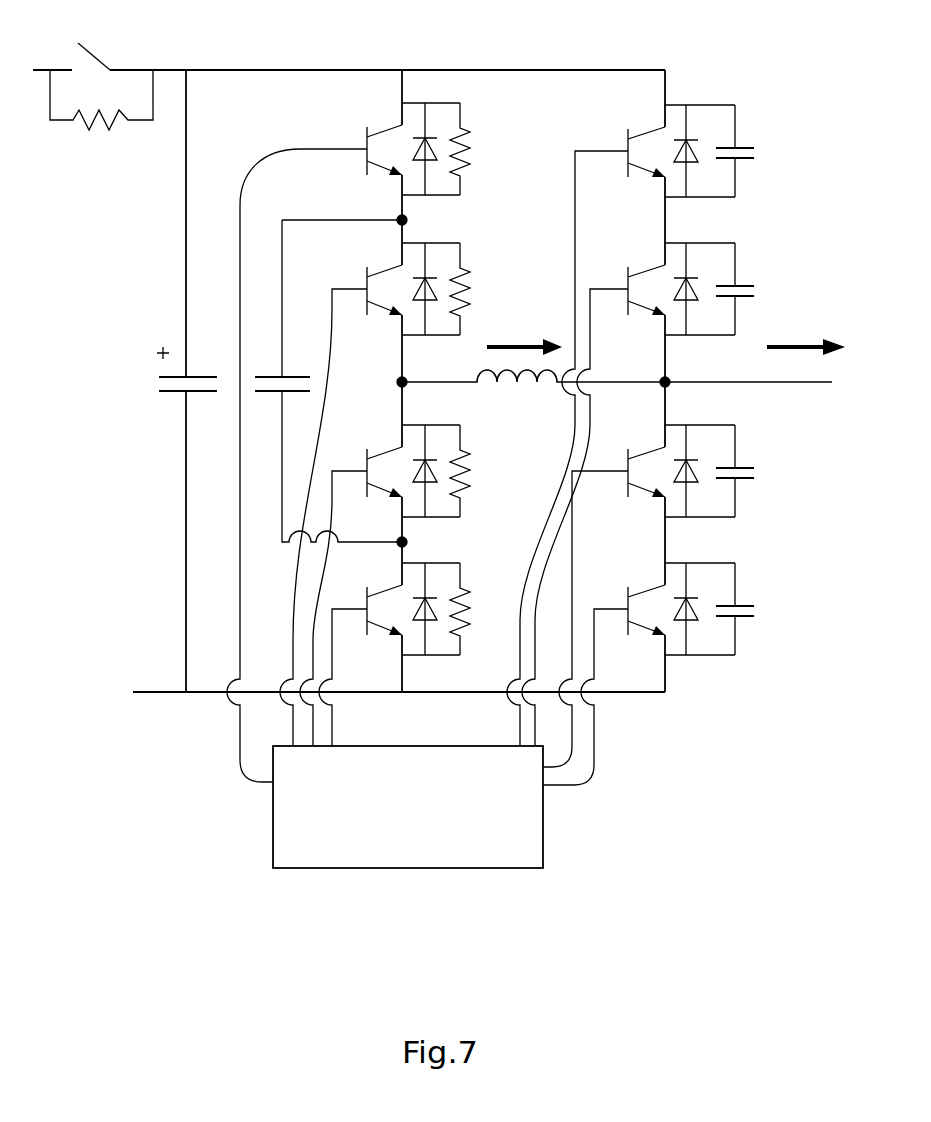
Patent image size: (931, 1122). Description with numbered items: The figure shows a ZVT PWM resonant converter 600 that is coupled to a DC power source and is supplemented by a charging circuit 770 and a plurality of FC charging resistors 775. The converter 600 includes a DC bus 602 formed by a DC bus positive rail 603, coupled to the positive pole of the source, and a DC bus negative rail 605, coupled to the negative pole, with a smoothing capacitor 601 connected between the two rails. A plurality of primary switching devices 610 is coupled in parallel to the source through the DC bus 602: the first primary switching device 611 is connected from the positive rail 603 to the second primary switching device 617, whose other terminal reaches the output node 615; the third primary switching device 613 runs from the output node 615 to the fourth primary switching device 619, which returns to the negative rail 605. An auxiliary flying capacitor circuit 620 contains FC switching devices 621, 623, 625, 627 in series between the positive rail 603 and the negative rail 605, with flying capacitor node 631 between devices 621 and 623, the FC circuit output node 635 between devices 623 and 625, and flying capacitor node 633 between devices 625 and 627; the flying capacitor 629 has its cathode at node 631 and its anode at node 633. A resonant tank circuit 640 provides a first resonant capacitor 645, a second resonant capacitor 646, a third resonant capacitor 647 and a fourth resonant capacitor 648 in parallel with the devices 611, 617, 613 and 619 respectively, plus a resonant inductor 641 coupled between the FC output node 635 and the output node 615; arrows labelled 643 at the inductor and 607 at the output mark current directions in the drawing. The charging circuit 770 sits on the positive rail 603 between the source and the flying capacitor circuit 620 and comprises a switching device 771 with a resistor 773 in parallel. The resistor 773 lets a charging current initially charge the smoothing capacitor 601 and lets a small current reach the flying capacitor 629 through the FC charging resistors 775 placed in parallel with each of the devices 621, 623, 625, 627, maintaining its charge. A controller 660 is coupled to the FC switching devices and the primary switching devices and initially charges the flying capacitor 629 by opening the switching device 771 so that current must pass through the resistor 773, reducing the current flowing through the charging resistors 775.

The converter 600 is at (180, 786).
The smoothing capacitor 601 is at (170, 394).
The DC bus 602 is at (216, 42).
The DC bus positive rail 603 is at (216, 72).
The DC bus negative rail 605 is at (198, 689).
The output current Id 607 is at (780, 345).
The plurality of primary switching devices 610 is at (700, 389).
The first primary switching device 611 is at (677, 104).
The third primary switching device 613 is at (678, 425).
The output node 615 is at (668, 379).
The second primary switching device 617 is at (677, 242).
The fourth primary switching device 619 is at (677, 563).
The auxiliary flying capacitor circuit 620 is at (435, 137).
The FC switching device 621 is at (425, 116).
The FC switching device 623 is at (425, 256).
The FC switching device 625 is at (425, 438).
The FC switching device 627 is at (425, 576).
The flying capacitor 629 is at (284, 375).
The flying capacitor node 631 is at (398, 224).
The flying capacitor node 633 is at (398, 544).
The FC circuit output node 635 is at (398, 384).
The resonant tank circuit 640 is at (618, 405).
The resonant inductor 641 is at (537, 385).
The inductor current Lr 643 is at (500, 345).
The first resonant capacitor 645 is at (740, 147).
The second resonant capacitor 646 is at (740, 285).
The third resonant capacitor 647 is at (740, 467).
The fourth resonant capacitor 648 is at (740, 605).
The controller 660 is at (543, 800).
The charging circuit 770 is at (95, 103).
The switching device 771 is at (108, 55).
The resistor 773 is at (121, 126).
The FC charging resistors 775 is at (470, 129).